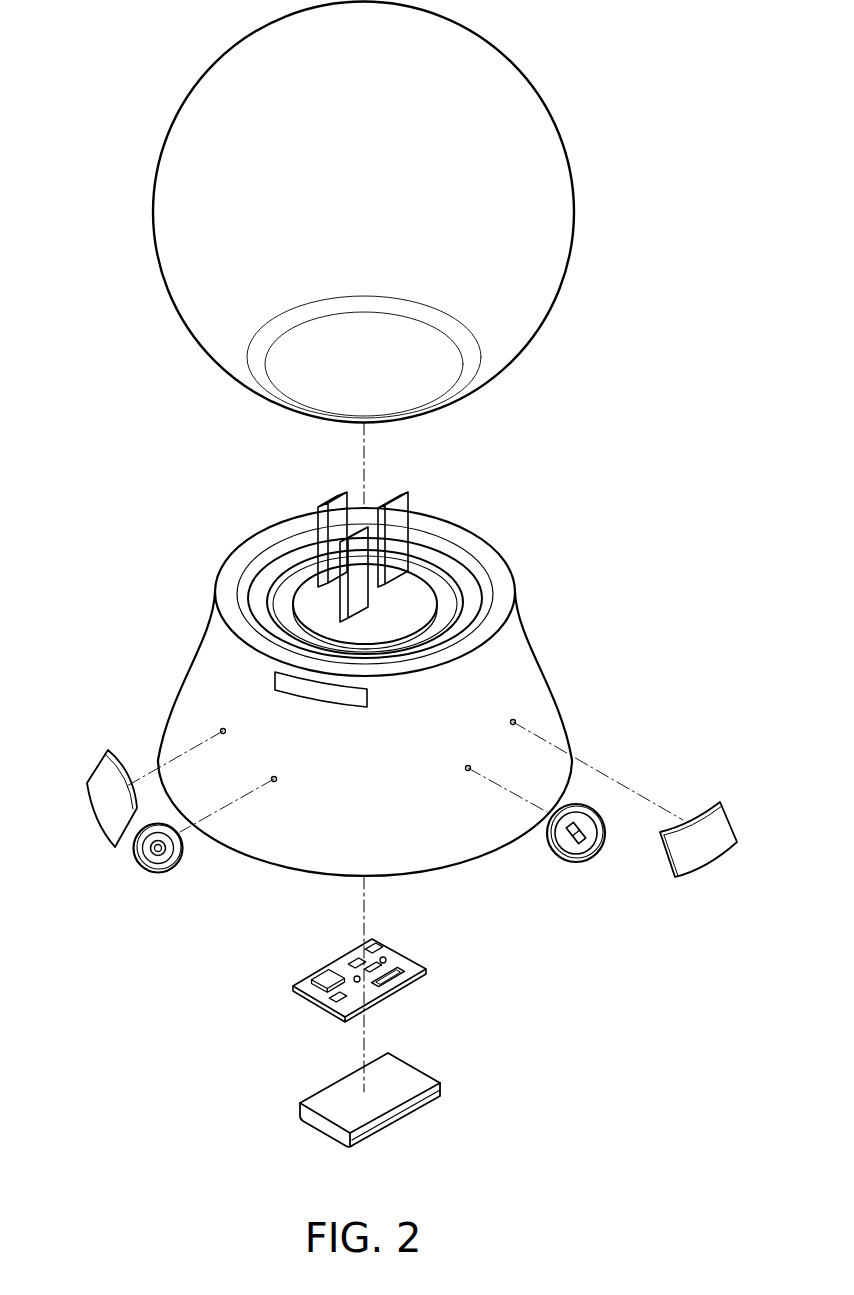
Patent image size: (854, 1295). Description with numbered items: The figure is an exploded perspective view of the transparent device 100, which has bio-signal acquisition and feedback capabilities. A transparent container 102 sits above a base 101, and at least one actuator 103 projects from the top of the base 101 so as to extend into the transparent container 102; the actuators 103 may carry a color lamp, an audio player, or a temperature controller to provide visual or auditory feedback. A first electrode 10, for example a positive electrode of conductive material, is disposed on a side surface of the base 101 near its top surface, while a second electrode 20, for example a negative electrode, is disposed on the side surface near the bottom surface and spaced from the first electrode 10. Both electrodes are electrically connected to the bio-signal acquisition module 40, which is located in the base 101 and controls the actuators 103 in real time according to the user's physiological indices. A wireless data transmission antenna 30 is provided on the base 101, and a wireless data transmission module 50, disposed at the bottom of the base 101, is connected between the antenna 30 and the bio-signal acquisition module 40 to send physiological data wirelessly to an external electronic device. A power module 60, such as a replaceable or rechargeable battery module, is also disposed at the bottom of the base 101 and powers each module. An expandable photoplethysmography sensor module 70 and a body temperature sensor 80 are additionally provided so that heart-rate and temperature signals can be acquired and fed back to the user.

The transparent device 100 is at (711, 43).
The base 101 is at (303, 850).
The transparent container 102 is at (523, 203).
The actuator 103 is at (333, 512).
The first electrode 10 is at (698, 852).
The second electrode 20 is at (103, 802).
The wireless data transmission antenna 30 is at (273, 683).
The bio-signal acquisition module 40 is at (323, 980).
The wireless data transmission module 50 is at (390, 943).
The power module 60 is at (402, 1072).
The photoplethysmography sensor module 70 is at (592, 858).
The body temperature sensor 80 is at (158, 873).